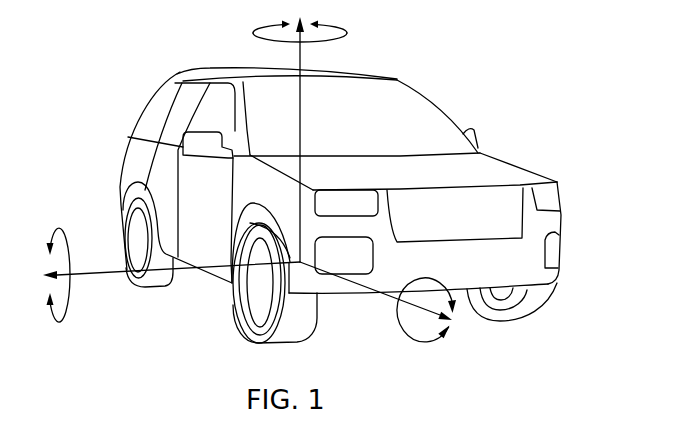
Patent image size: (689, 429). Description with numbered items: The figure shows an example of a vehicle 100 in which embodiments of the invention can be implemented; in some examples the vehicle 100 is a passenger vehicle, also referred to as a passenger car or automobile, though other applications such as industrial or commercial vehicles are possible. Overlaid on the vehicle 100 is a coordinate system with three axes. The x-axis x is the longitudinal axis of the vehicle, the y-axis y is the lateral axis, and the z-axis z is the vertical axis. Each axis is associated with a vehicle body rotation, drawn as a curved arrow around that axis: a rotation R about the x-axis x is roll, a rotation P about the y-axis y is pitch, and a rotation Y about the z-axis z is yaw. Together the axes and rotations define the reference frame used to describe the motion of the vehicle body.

The vehicle 100 is at (432, 140).
The x-axis x is at (376, 291).
The y-axis y is at (171, 276).
The z-axis z is at (294, 139).
The yaw Y is at (291, 30).
The pitch P is at (65, 279).
The roll R is at (418, 313).